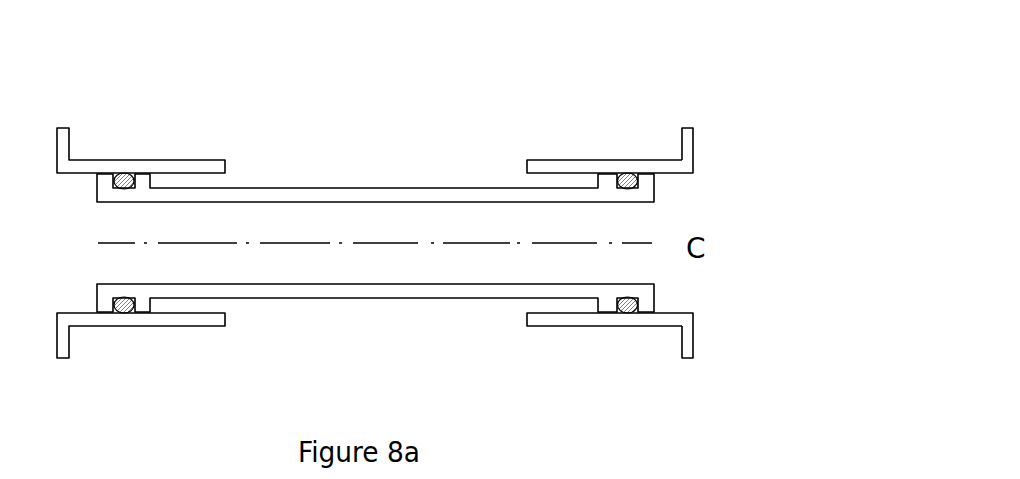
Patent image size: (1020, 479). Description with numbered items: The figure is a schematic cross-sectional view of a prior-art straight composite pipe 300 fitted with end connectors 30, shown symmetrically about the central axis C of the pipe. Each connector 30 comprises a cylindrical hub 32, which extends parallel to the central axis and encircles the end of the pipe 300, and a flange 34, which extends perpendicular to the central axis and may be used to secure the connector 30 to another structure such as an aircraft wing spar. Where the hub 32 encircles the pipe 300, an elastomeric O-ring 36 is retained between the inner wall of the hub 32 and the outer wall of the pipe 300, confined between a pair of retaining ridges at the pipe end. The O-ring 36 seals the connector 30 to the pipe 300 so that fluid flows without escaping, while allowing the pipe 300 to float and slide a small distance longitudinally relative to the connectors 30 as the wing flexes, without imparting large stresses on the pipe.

The end connector 30 is at (375, 250).
The composite pipe 300 is at (357, 168).
The cylindrical hub 32 is at (562, 168).
The flange 34 is at (683, 143).
The elastomeric O-ring 36 is at (620, 175).